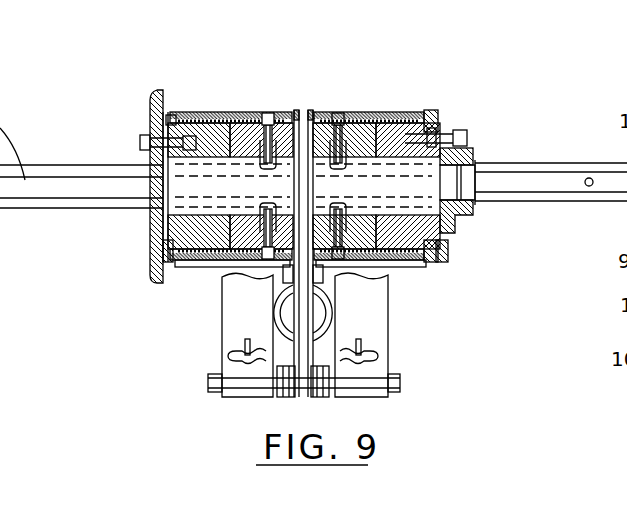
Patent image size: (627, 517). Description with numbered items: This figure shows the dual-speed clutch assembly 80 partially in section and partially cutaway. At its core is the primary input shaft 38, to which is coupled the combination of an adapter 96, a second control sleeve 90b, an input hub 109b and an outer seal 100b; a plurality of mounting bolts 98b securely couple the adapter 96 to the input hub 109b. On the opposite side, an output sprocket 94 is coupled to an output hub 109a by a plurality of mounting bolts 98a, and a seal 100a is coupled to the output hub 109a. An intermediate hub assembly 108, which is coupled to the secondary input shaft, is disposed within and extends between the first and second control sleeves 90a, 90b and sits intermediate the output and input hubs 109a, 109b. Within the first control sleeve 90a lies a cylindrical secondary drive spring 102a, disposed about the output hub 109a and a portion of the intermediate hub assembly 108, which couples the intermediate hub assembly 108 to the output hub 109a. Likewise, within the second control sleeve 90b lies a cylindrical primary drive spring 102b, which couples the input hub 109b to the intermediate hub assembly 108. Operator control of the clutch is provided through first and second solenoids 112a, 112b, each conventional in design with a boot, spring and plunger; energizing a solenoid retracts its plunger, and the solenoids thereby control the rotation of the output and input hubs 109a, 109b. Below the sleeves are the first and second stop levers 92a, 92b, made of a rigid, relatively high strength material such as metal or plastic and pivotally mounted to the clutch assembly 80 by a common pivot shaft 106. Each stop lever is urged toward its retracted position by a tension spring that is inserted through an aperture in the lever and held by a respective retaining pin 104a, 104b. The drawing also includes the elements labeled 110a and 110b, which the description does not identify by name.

The dual-speed clutch assembly 80 is at (236, 52).
The primary input shaft 38 is at (542, 170).
The first control sleeve 90a is at (247, 108).
The second control sleeve 90b is at (385, 108).
The first stop lever 92a is at (268, 309).
The second stop lever 92b is at (380, 309).
The output sprocket 94 is at (152, 100).
The adapter 96 is at (455, 224).
The mounting bolts 98a is at (140, 141).
The mounting bolts 98b is at (463, 129).
The seal 100a is at (168, 266).
The outer seal 100b is at (440, 257).
The secondary drive spring 102a is at (214, 110).
The primary drive spring 102b is at (406, 108).
The retaining pin 104a is at (223, 354).
The retaining pin 104b is at (387, 347).
The pivot shaft 106 is at (400, 385).
The intermediate hub assembly 108 is at (372, 103).
The output hub 109a is at (202, 110).
The input hub 109b is at (420, 108).
The pin 110a is at (291, 110).
The pin 110b is at (316, 108).
The first solenoid 112a is at (282, 313).
The second solenoid 112b is at (330, 320).